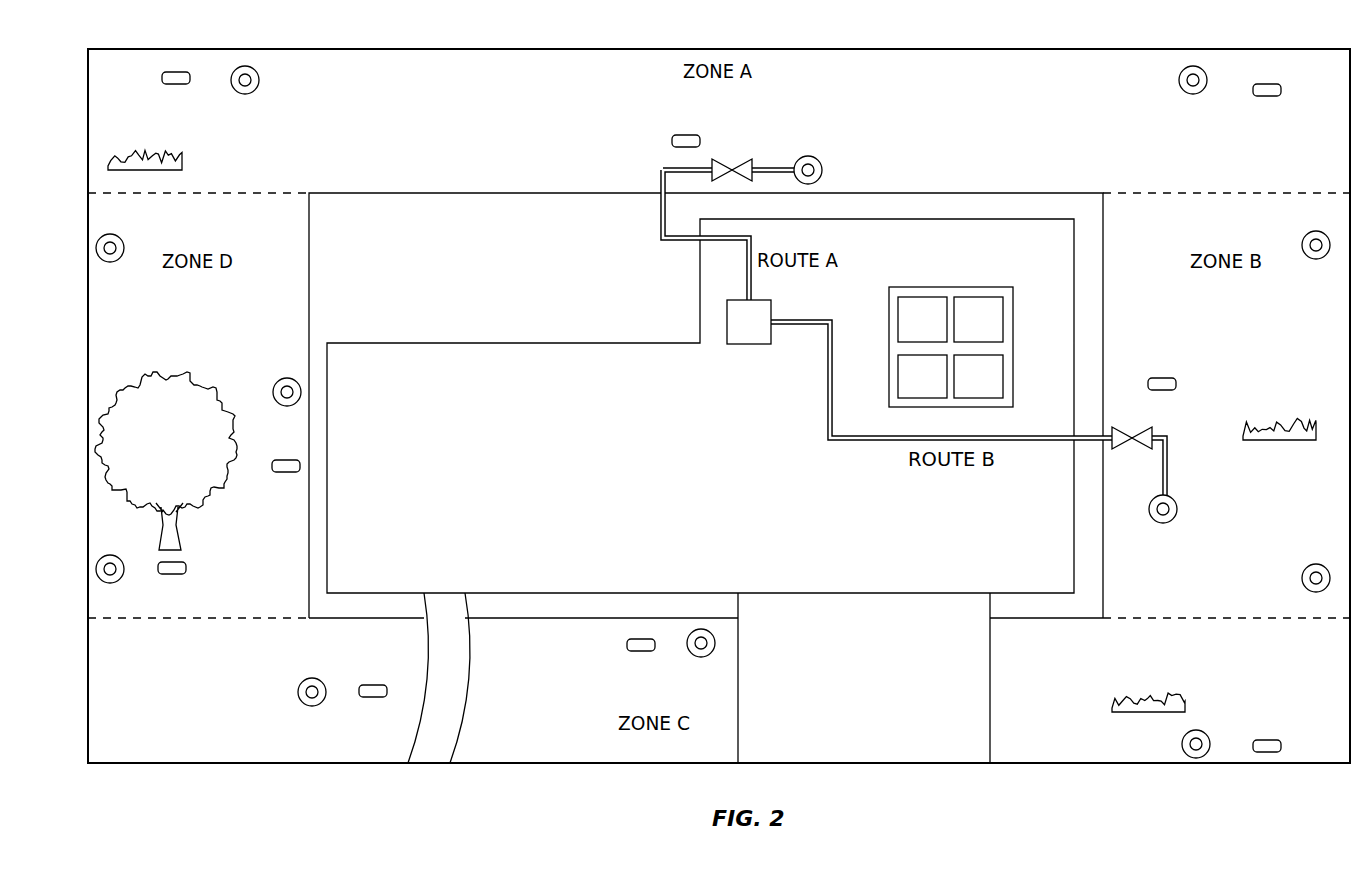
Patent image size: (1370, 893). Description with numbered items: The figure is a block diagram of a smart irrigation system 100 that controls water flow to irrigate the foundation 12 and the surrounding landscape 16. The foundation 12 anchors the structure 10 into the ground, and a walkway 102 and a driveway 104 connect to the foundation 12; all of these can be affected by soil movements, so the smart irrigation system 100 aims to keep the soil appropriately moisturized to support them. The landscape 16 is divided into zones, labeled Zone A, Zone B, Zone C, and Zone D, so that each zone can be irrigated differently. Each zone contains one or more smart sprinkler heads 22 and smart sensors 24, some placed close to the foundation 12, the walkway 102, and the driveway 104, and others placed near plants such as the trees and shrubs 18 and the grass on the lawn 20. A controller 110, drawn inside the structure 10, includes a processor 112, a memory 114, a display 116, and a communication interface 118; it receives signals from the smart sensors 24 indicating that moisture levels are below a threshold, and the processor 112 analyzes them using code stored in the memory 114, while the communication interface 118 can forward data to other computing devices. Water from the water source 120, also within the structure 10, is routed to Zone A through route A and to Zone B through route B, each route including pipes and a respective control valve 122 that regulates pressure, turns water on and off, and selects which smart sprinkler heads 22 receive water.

The structure 10 is at (958, 219).
The foundation 12 is at (548, 193).
The landscape 16 is at (720, 49).
The trees and shrubs 18 is at (185, 383).
The grass on the lawn 20 is at (155, 160).
The smart sprinkler heads 22 is at (259, 80).
The smart sensors 24 is at (172, 85).
The smart irrigation system 100 is at (1233, 23).
The walkway 102 is at (472, 676).
The driveway 104 is at (990, 675).
The controller 110 is at (950, 287).
The processor 112 is at (922, 319).
The memory 114 is at (978, 319).
The display 116 is at (922, 376).
The communication interface 118 is at (978, 376).
The water source 120 is at (741, 344).
The control valve 122 is at (750, 160).